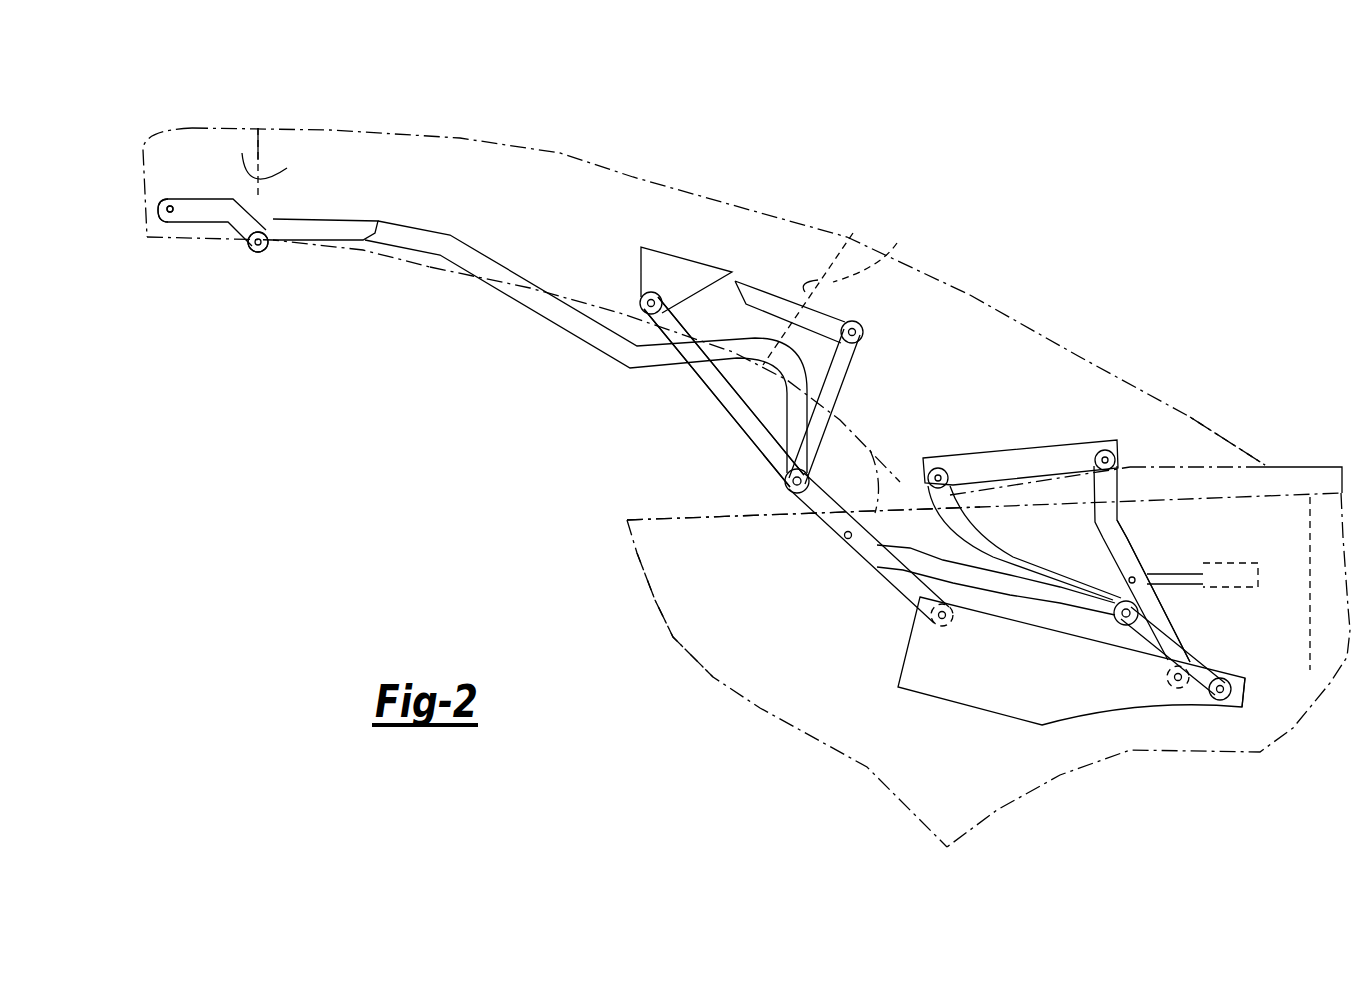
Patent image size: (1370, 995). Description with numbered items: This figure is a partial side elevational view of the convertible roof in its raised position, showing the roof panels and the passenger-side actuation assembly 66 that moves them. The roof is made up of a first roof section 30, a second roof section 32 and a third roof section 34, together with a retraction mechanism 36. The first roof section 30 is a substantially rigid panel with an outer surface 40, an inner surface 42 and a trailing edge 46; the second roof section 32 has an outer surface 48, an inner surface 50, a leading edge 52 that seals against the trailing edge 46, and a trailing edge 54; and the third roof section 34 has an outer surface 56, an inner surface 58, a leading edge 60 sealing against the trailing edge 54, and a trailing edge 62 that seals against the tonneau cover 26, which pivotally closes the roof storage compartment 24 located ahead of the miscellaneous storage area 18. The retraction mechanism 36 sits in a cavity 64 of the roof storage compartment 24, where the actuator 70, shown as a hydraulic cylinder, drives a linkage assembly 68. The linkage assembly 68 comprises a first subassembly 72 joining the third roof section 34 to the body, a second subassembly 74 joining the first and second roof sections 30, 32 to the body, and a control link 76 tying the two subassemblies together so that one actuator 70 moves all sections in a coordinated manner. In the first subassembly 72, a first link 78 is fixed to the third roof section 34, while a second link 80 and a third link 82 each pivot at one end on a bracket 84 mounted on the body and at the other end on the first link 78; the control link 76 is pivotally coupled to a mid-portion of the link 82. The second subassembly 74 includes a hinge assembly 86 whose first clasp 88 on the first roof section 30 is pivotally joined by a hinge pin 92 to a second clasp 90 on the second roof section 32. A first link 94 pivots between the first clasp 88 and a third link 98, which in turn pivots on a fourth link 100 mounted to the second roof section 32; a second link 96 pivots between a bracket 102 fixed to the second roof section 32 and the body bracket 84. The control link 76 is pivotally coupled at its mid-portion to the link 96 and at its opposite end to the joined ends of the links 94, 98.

The miscellaneous storage area 18 is at (1349, 640).
The roof storage compartment 24 is at (787, 683).
The tonneau cover 26 is at (1285, 473).
The first roof section 30 is at (219, 176).
The second roof section 32 is at (334, 190).
The third roof section 34 is at (909, 326).
The retraction mechanism 36 is at (718, 418).
The outer surface 40 is at (243, 127).
The inner surface 42 is at (207, 240).
The trailing edge 46 is at (287, 167).
The outer surface 48 is at (551, 152).
The inner surface 50 is at (410, 265).
The leading edge 52 is at (268, 137).
The trailing edge 54 is at (853, 233).
The outer surface 56 is at (970, 297).
The inner surface 58 is at (883, 505).
The leading edge 60 is at (897, 243).
The trailing edge 62 is at (1265, 465).
The cavity 64 is at (1194, 756).
The actuation assembly 66 is at (647, 493).
The linkage assembly 68 is at (741, 557).
The actuator 70 is at (1227, 570).
The first subassembly 72 is at (1164, 605).
The second subassembly 74 is at (873, 576).
The control link 76 is at (985, 587).
The first link 78 is at (1007, 457).
The second link 80 is at (983, 540).
The third link 82 is at (1117, 542).
The bracket 84 is at (940, 693).
The hinge assembly 86 is at (275, 283).
The first clasp 88 is at (232, 208).
The second clasp 90 is at (357, 220).
The hinge pin 92 is at (265, 250).
The first link 94 is at (573, 328).
The second link 96 is at (717, 387).
The third link 98 is at (840, 375).
The fourth link 100 is at (763, 300).
The bracket 102 is at (660, 267).